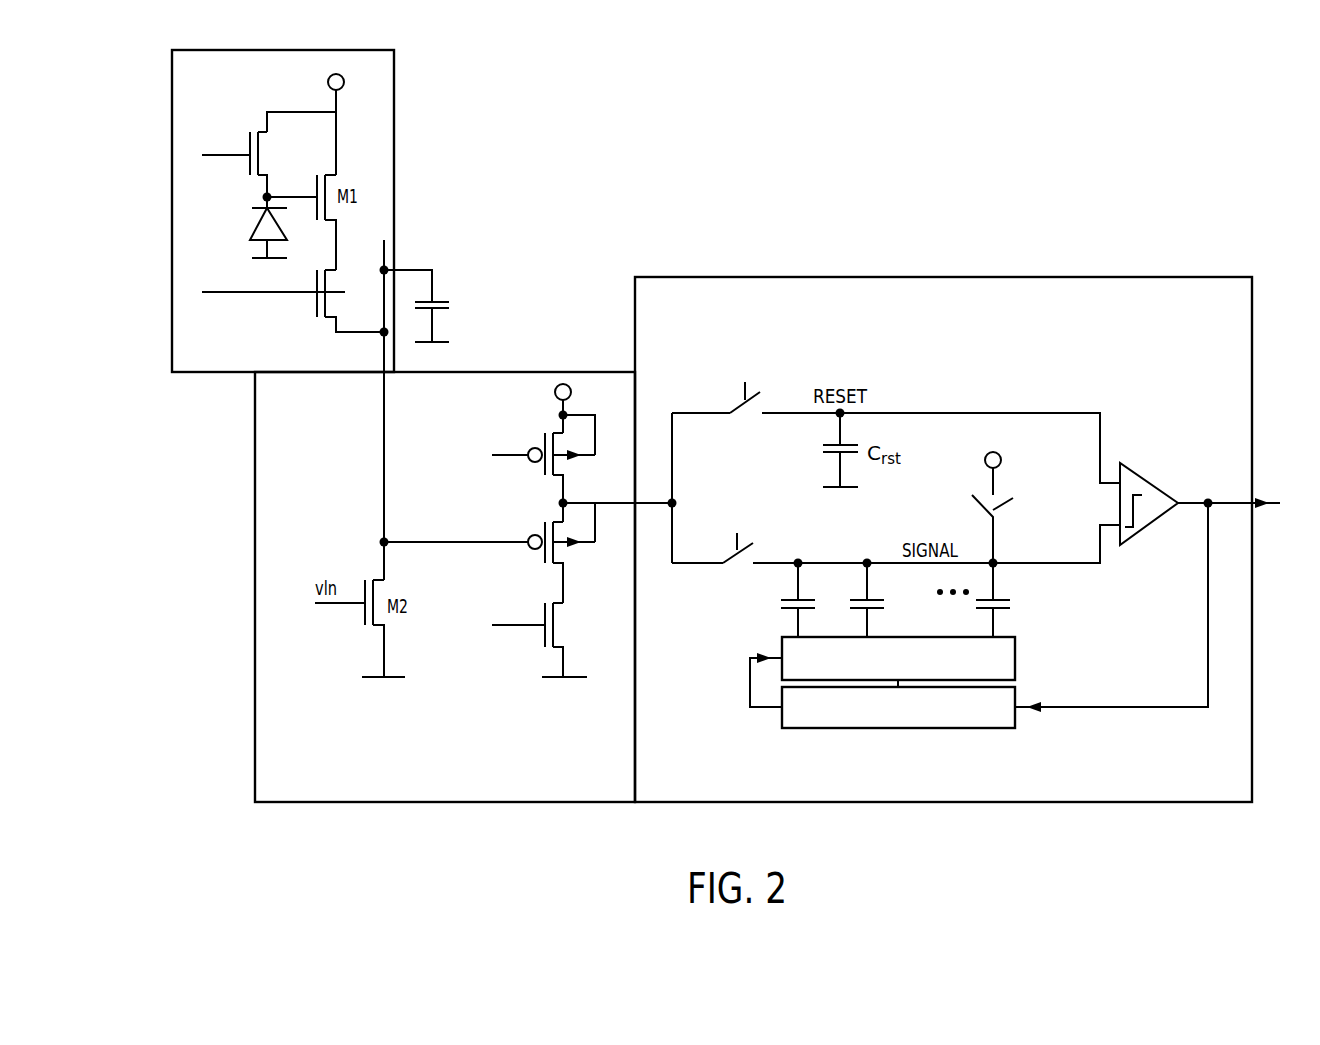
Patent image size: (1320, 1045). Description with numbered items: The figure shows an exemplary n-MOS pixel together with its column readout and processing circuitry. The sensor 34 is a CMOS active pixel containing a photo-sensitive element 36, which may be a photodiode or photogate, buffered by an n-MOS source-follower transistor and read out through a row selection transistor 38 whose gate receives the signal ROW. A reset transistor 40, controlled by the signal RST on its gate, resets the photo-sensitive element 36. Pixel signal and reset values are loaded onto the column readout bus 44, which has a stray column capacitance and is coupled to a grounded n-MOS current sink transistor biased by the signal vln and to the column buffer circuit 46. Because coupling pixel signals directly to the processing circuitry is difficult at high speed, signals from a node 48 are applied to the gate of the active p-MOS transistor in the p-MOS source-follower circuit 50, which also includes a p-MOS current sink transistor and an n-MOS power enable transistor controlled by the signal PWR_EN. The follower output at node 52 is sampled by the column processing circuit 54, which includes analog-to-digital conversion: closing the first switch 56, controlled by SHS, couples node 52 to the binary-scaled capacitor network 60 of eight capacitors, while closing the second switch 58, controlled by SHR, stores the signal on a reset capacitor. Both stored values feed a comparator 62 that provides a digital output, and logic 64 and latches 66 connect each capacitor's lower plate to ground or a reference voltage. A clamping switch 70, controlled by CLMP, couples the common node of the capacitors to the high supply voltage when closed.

The sensor 34 is at (395, 87).
The photo-sensitive element 36 is at (242, 230).
The row selection transistor 38 is at (317, 322).
The reset transistor 40 is at (242, 138).
The column readout bus 44 is at (390, 253).
The column buffer circuit 46 is at (255, 705).
The node 48 is at (392, 530).
The p-MOS source-follower circuit 50 is at (477, 677).
The node 52 is at (680, 489).
The column processing circuit 54 is at (845, 803).
The first switch 56 is at (723, 572).
The second switch 58 is at (752, 417).
The binary-scaled capacitor network 60 is at (1075, 606).
The comparator 62 is at (1153, 528).
The logic 64 is at (810, 732).
The latches 66 is at (780, 647).
The clamping switch 70 is at (968, 513).